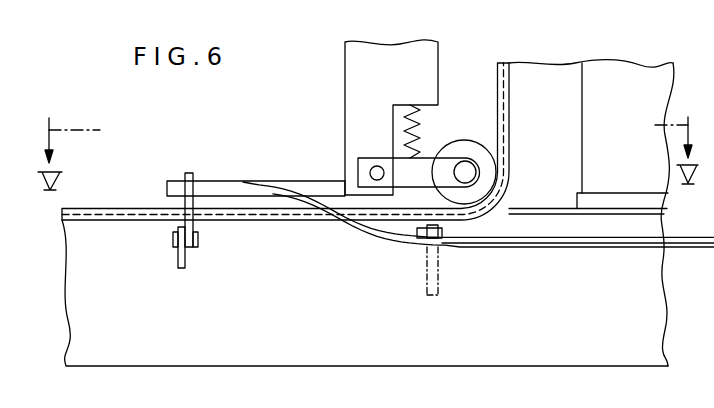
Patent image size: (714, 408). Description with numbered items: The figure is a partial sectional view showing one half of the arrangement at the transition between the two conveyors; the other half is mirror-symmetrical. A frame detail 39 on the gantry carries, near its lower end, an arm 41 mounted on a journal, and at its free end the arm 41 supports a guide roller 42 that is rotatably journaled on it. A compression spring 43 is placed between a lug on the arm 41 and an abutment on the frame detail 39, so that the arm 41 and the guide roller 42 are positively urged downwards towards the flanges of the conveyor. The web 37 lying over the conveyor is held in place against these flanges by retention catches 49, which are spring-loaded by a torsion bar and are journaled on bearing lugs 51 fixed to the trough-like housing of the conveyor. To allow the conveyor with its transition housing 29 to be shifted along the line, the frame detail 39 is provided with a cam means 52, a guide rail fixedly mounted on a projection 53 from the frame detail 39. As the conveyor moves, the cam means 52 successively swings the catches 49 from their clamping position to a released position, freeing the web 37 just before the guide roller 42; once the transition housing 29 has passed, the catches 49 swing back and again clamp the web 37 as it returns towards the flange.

The transition housing 29 is at (605, 78).
The web 37 is at (116, 208).
The frame detail 39 is at (357, 63).
The arm 41 is at (396, 165).
The guide roller 42 is at (468, 140).
The compression spring 43 is at (421, 124).
The retention catch 49 is at (195, 231).
The bearing lug 51 is at (178, 256).
The cam means 52 is at (332, 219).
The projection 53 is at (300, 181).